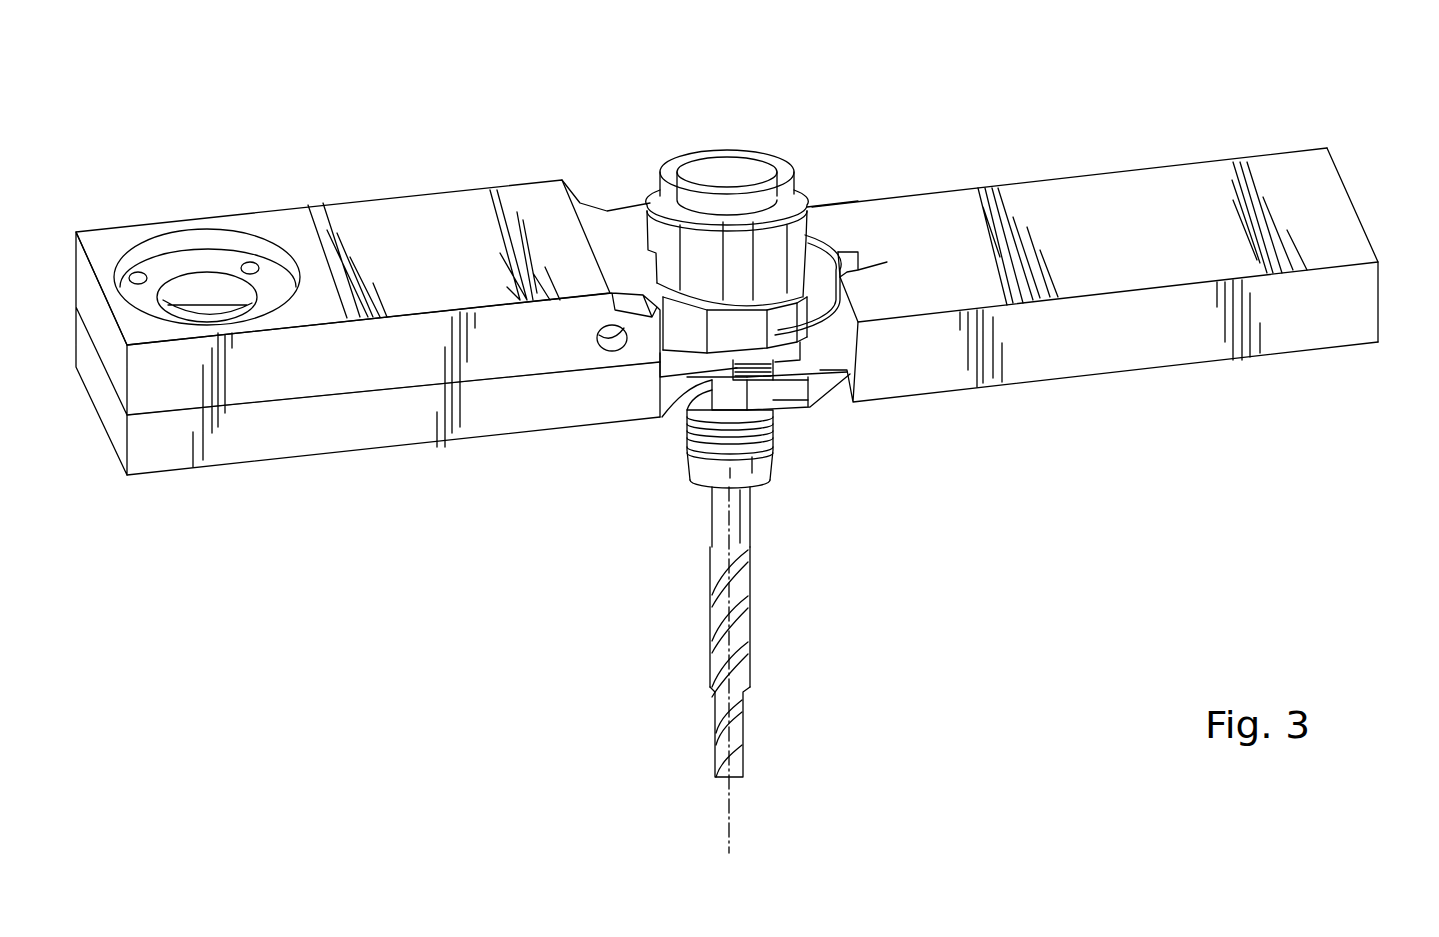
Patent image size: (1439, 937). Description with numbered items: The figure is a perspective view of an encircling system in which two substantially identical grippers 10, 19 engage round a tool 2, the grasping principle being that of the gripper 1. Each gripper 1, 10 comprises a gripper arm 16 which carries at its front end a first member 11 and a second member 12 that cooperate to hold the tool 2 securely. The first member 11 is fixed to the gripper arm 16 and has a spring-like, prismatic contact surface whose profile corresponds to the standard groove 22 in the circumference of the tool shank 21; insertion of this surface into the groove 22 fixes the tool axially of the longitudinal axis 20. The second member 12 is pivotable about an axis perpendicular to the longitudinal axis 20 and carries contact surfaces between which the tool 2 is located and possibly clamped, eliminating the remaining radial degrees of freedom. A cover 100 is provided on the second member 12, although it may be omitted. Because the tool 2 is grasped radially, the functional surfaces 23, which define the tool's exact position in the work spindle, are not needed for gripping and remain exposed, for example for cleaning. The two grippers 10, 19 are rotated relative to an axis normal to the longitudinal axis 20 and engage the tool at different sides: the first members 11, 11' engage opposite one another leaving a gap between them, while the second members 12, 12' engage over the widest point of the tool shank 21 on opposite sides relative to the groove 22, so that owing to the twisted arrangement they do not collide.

The gripper 1 is at (420, 150).
The tool 2 is at (694, 492).
The gripper 10 is at (392, 432).
The first member 11 is at (695, 435).
The first member 11' is at (831, 416).
The second member 12 is at (727, 225).
The second member 12' is at (827, 442).
The gripper arm 16 is at (290, 222).
The gripper 19 is at (1182, 340).
The longitudinal axis 20 is at (728, 830).
The tool shank 21 is at (857, 240).
The groove 22 is at (767, 377).
The functional surfaces 23 is at (827, 253).
The cover 100 is at (673, 287).